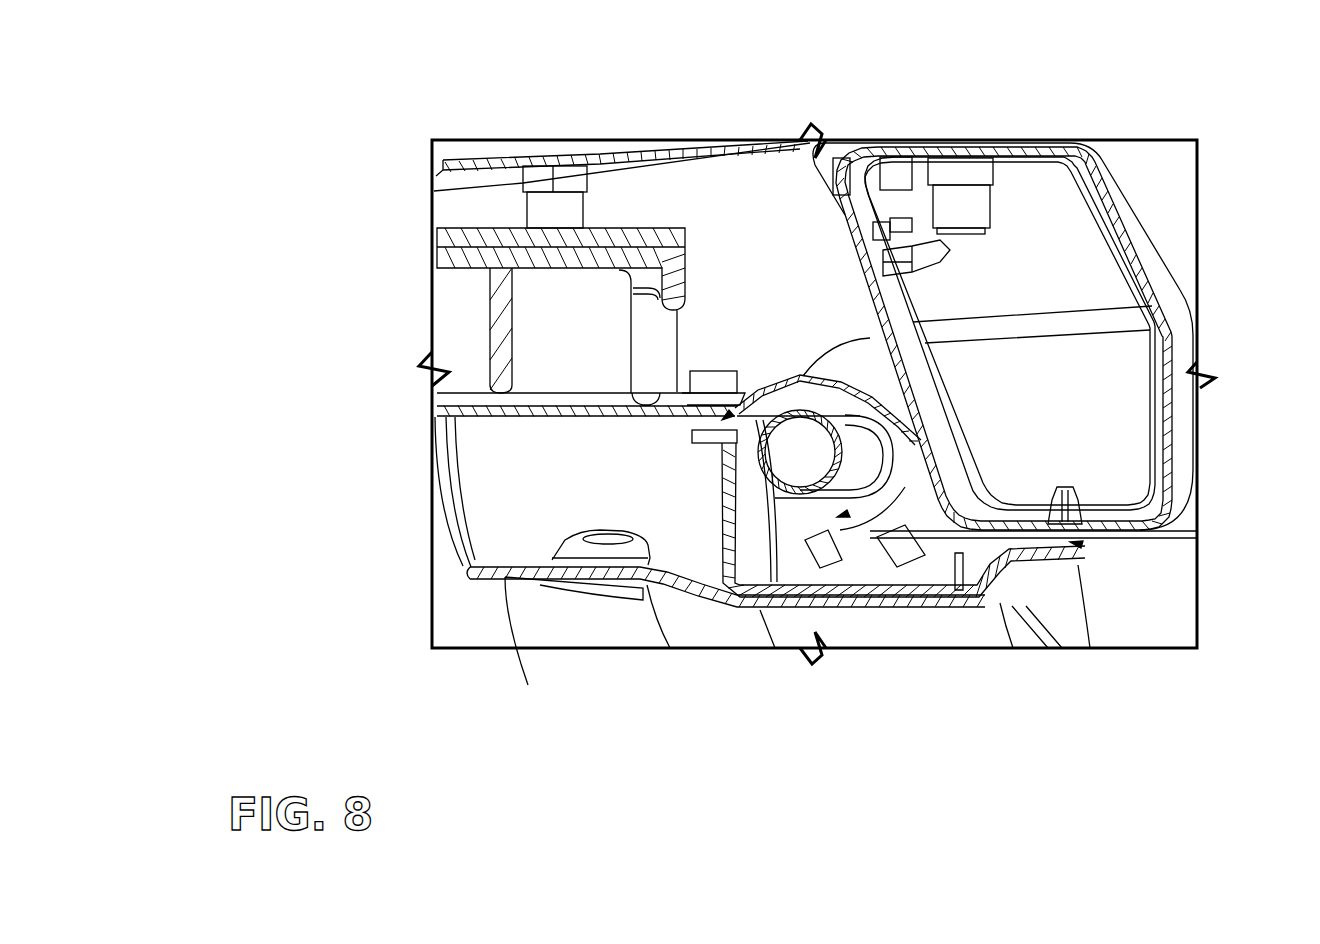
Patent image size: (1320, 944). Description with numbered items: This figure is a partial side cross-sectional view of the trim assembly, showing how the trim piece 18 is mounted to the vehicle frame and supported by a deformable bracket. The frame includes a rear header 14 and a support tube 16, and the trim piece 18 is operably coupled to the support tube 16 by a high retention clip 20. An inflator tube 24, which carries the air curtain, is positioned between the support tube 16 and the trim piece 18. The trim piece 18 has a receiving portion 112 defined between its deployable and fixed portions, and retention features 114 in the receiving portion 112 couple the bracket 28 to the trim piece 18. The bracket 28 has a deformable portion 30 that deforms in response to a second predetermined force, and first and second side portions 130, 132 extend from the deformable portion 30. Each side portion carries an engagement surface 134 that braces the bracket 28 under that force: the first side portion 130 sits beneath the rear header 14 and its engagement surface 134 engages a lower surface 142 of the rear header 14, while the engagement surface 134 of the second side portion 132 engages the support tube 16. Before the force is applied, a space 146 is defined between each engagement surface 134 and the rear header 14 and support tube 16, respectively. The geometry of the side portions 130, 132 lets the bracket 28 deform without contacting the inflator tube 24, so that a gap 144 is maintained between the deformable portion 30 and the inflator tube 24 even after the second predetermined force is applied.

The rear header 14 is at (577, 403).
The support tube 16 is at (1180, 420).
The trim piece 18 is at (468, 578).
The high retention clip 20 is at (1067, 503).
The inflator tube 24 is at (848, 438).
The bracket 28 is at (750, 606).
The deformable portion 30 is at (890, 566).
The receiving portion 112 is at (958, 600).
The retention features 114 is at (885, 568).
The first side portion 130 is at (727, 497).
The second side portion 132 is at (1065, 582).
The engagement surface 134 is at (705, 425).
The lower surface 142 is at (560, 420).
The gap 144 is at (837, 517).
The space 146 is at (722, 420).